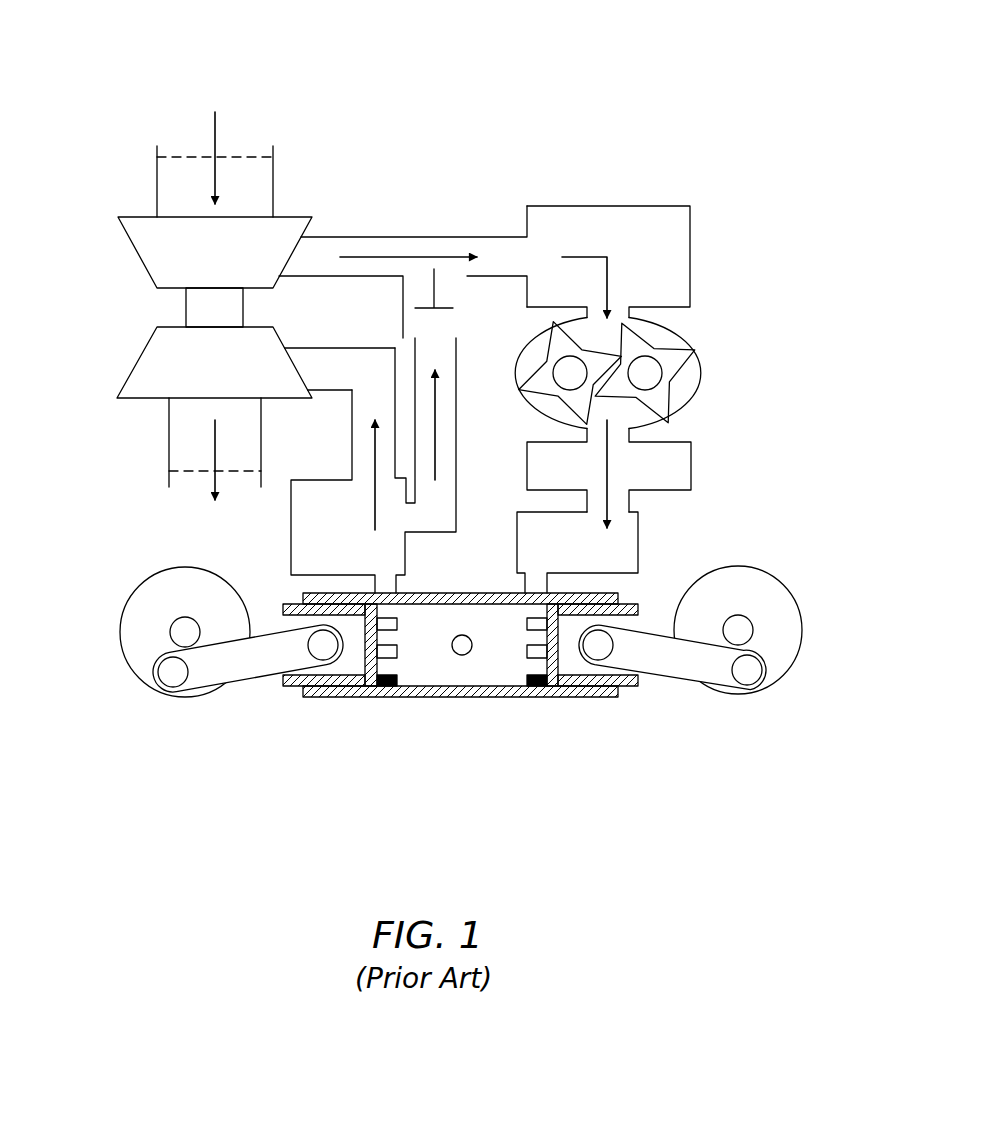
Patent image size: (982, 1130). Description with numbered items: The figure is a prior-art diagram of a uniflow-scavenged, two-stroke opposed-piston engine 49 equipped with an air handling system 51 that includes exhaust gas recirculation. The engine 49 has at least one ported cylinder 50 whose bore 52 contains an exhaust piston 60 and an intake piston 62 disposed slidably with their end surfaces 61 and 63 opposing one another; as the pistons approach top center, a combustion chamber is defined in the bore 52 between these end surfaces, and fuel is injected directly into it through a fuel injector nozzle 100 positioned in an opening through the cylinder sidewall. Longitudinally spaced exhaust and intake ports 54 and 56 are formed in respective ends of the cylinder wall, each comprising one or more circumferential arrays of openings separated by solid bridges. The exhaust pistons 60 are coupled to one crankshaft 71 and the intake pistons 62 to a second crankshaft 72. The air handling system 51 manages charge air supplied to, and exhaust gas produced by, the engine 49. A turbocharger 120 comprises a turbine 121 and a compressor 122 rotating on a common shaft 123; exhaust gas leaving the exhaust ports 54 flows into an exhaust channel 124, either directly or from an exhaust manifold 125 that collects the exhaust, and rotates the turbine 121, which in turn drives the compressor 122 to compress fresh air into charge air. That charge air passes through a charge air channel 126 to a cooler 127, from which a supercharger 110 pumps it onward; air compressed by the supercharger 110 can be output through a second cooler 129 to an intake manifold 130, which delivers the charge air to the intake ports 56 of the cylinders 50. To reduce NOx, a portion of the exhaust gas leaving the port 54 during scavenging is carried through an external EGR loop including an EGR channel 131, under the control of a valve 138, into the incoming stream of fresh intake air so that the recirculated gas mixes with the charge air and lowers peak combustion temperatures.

The air handling system 51 is at (526, 43).
The turbocharger 120 is at (187, 305).
The compressor 122 is at (178, 183).
The turbine 121 is at (168, 429).
The common shaft 123 is at (268, 307).
The exhaust channel 124 is at (331, 411).
The exhaust manifold 125 is at (320, 465).
The charge air channel 126 is at (403, 255).
The valve 138 is at (468, 295).
The EGR channel 131 is at (458, 465).
The cooler 127 is at (646, 262).
The supercharger 110 is at (646, 367).
The cooler 129 is at (646, 474).
The intake manifold 130 is at (621, 552).
The opposed-piston engine 49 is at (480, 591).
The ported cylinder 50 is at (460, 628).
The exhaust piston 60 is at (370, 634).
The end surface of exhaust piston 61 is at (417, 612).
The intake piston 62 is at (581, 612).
The end surface of intake piston 63 is at (515, 612).
The bore 52 is at (462, 683).
The fuel injector nozzle 100 is at (490, 632).
The exhaust port 54 is at (368, 677).
The intake port 56 is at (570, 678).
The crankshaft 71 is at (231, 656).
The crankshaft 72 is at (690, 656).